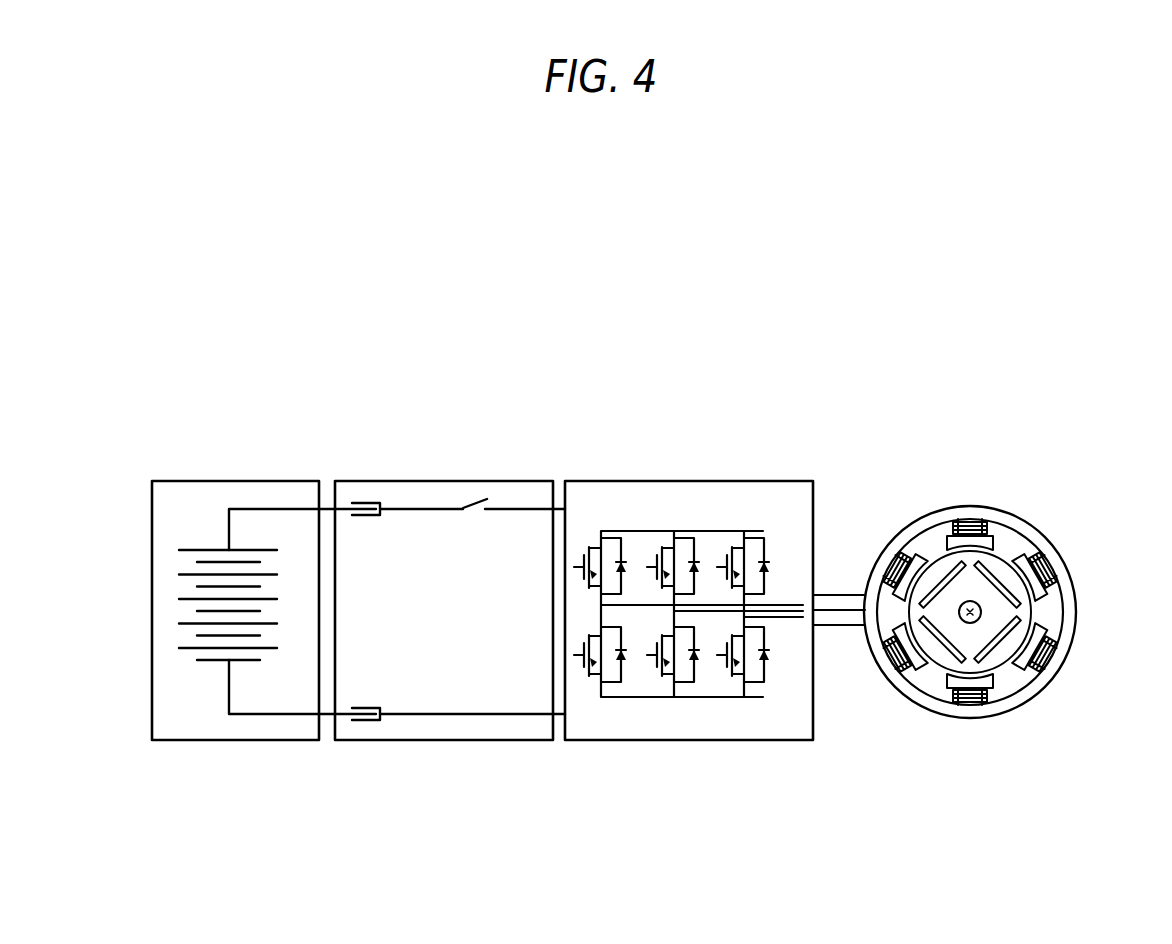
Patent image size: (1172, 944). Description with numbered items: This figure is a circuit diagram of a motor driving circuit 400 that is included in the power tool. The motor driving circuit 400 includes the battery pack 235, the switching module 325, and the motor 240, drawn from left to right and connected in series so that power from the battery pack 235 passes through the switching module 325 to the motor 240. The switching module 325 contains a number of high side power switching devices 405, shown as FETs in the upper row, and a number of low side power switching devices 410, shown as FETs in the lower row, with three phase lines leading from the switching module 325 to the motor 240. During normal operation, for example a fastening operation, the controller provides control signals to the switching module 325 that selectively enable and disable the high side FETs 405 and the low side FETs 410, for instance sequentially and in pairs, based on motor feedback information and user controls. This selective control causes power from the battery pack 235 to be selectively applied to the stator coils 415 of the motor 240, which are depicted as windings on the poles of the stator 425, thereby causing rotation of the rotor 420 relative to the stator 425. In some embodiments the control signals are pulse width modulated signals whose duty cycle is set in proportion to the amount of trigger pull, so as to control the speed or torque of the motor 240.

The motor driving circuit 400 is at (442, 382).
The battery pack 235 is at (196, 742).
The switching module 325 is at (688, 742).
The high side power switching devices 405 is at (603, 562).
The low side power switching devices 410 is at (598, 662).
The motor 240 is at (970, 719).
The stator 425 is at (970, 505).
The stator coils 415 is at (989, 527).
The rotor 420 is at (1028, 608).